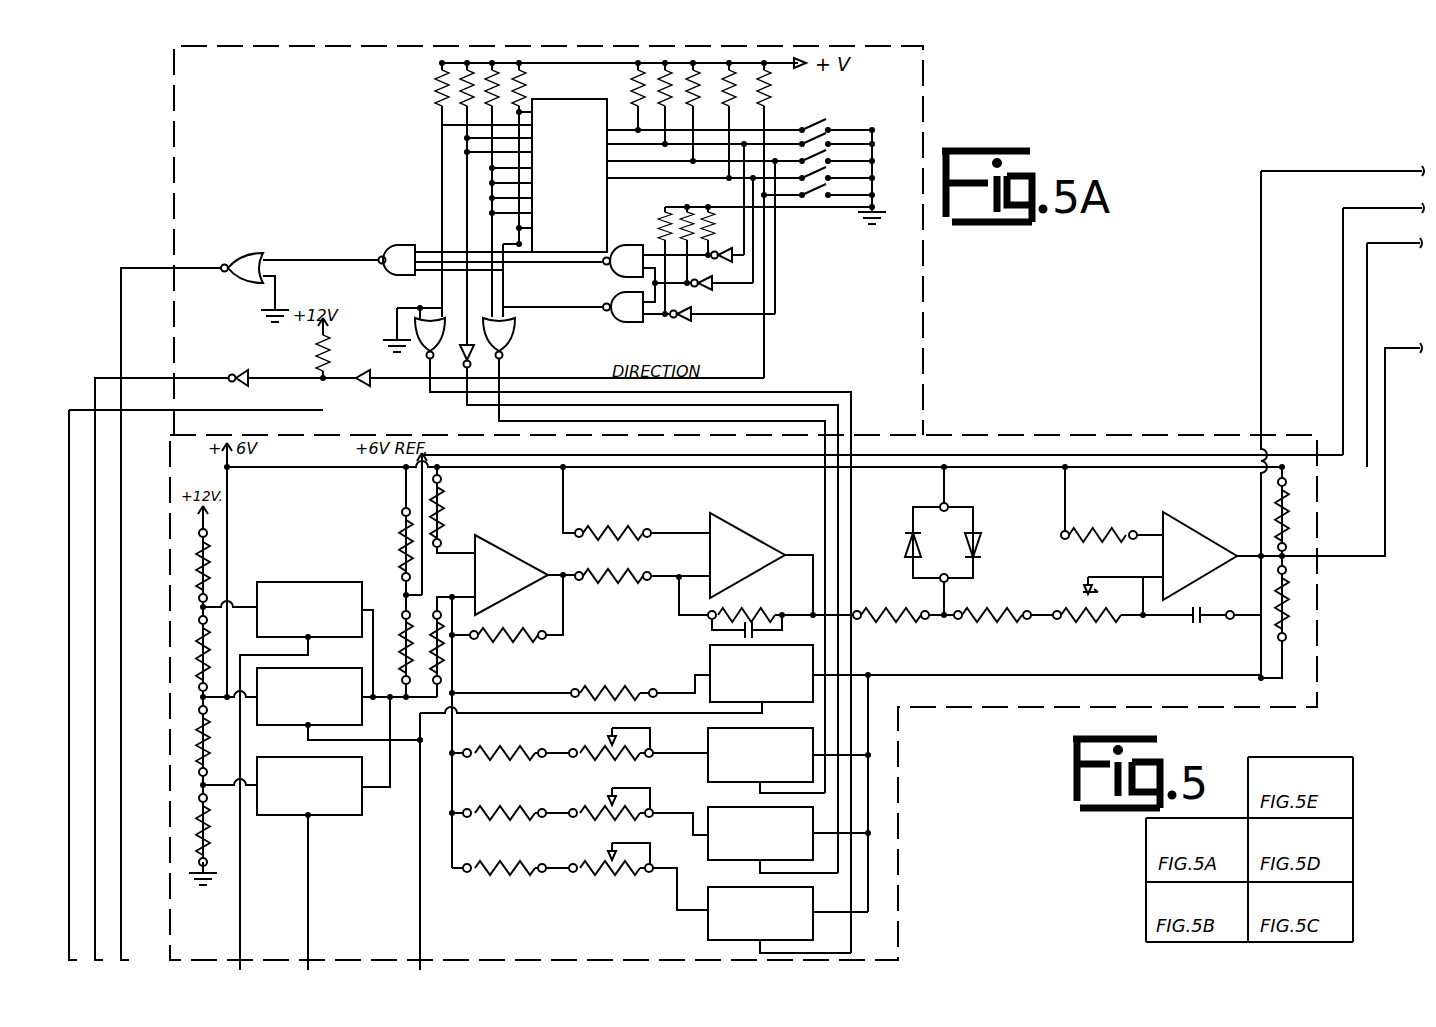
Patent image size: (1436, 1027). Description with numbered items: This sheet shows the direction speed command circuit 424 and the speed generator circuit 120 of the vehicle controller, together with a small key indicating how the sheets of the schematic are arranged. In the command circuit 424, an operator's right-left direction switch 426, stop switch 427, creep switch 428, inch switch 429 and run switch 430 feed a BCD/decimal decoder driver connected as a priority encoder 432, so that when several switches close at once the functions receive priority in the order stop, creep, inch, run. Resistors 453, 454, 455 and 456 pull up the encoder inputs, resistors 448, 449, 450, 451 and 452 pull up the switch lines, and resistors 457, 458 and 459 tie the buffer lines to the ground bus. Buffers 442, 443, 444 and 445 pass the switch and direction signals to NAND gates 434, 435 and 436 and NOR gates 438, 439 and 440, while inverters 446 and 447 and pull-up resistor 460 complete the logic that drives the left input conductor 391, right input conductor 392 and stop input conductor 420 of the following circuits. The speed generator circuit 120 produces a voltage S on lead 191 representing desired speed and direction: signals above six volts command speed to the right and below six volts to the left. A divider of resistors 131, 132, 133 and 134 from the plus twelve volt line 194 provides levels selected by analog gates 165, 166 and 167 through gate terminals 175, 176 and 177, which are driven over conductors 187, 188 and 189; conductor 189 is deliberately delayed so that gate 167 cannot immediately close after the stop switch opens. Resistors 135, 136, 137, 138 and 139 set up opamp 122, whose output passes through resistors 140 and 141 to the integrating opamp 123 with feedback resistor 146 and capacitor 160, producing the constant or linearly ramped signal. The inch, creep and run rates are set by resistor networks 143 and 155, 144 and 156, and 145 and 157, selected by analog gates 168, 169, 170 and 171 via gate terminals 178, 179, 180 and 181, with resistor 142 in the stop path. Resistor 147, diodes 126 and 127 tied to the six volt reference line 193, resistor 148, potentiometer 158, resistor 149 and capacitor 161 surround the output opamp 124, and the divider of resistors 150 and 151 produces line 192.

In FIG. 5A, the resistor 456 is at (437, 90).
In FIG. 5A, the resistor 455 is at (477, 202).
In FIG. 5A, the resistor 454 is at (503, 188).
In FIG. 5A, the resistor 453 is at (529, 153).
In FIG. 5A, the priority encoder 432 is at (618, 100).
In FIG. 5A, the resistor 452 is at (642, 96).
In FIG. 5A, the resistor 451 is at (669, 103).
In FIG. 5A, the resistor 450 is at (697, 112).
In FIG. 5A, the resistor 449 is at (734, 120).
In FIG. 5A, the resistor 448 is at (775, 219).
In FIG. 5A, the run switch 430 is at (818, 126).
In FIG. 5A, the inch switch 429 is at (832, 140).
In FIG. 5A, the creep switch 428 is at (850, 158).
In FIG. 5A, the stop switch 427 is at (860, 180).
In FIG. 5A, the right-left direction switch 426 is at (815, 200).
In FIG. 5A, the resistor 457 is at (662, 214).
In FIG. 5A, the resistor 458 is at (687, 208).
In FIG. 5A, the resistor 459 is at (708, 215).
In FIG. 5A, the NOR gate 438 is at (242, 252).
In FIG. 5A, the NAND gate 436 is at (405, 243).
In FIG. 5A, the NOR gate 439 is at (432, 312).
In FIG. 5A, the NAND gate 435 is at (606, 276).
In FIG. 5A, the NAND gate 434 is at (636, 323).
In FIG. 5A, the buffer 443 is at (702, 290).
In FIG. 5A, the buffer 442 is at (735, 258).
In FIG. 5A, the buffer 444 is at (688, 318).
In FIG. 5A, the NOR gate 440 is at (512, 330).
In FIG. 5A, the inverter 446 is at (475, 363).
In FIG. 5A, the inverter 447 is at (238, 372).
In FIG. 5A, the resistor 460 is at (330, 358).
In FIG. 5A, the buffer 445 is at (360, 384).
In FIG. 5A, the direction speed command circuit 424 is at (932, 293).
In FIG. 5, the speed generator circuit 120 is at (934, 423).
In FIG. 5, the resistor 132 is at (206, 588).
In FIG. 5, the resistor 131 is at (206, 690).
In FIG. 5, the resistor 133 is at (206, 758).
In FIG. 5, the resistor 134 is at (206, 812).
In FIG. 5, the analog gate 165 is at (347, 582).
In FIG. 5, the analog gate 166 is at (320, 668).
In FIG. 5, the analog gate 167 is at (337, 818).
In FIG. 5, the gate terminal 175 is at (305, 646).
In FIG. 5, the gate terminal 176 is at (308, 734).
In FIG. 5, the gate terminal 177 is at (305, 818).
In FIG. 5, the conductor 187 is at (240, 873).
In FIG. 5, the conductor 188 is at (310, 868).
In FIG. 5, the conductor 189 is at (420, 884).
In FIG. 5, the resistor 135 is at (403, 545).
In FIG. 5, the resistor 136 is at (402, 630).
In FIG. 5, the resistor 137 is at (442, 508).
In FIG. 5, the resistor 138 is at (452, 660).
In FIG. 5, the opamp 122 is at (502, 547).
In FIG. 5, the resistor 139 is at (515, 641).
In FIG. 5, the resistor 140 is at (600, 530).
In FIG. 5, the resistor 141 is at (598, 582).
In FIG. 5, the resistor 142 is at (632, 688).
In FIG. 5, the opamp 123 is at (756, 542).
In FIG. 5, the resistor 146 is at (745, 612).
In FIG. 5, the capacitor 160 is at (742, 631).
In FIG. 5, the analog gate 168 is at (710, 656).
In FIG. 5, the gate terminal 178 is at (766, 708).
In FIG. 5, the analog gate 169 is at (708, 731).
In FIG. 5, the gate terminal 179 is at (708, 790).
In FIG. 5, the analog gate 170 is at (708, 807).
In FIG. 5, the gate terminal 180 is at (757, 863).
In FIG. 5, the analog gate 171 is at (707, 897).
In FIG. 5, the gate terminal 181 is at (712, 953).
In FIG. 5, the resistor 143 is at (500, 750).
In FIG. 5, the potentiometer 155 is at (605, 750).
In FIG. 5, the resistor 144 is at (500, 810).
In FIG. 5, the potentiometer 156 is at (605, 810).
In FIG. 5, the resistor 145 is at (500, 866).
In FIG. 5, the potentiometer 157 is at (605, 865).
In FIG. 5, the resistor 147 is at (900, 612).
In FIG. 5, the diode 127 is at (905, 548).
In FIG. 5, the diode 126 is at (975, 532).
In FIG. 5, the resistor 148 is at (995, 620).
In FIG. 5, the potentiometer 158 is at (1105, 625).
In FIG. 5, the capacitor 161 is at (1185, 627).
In FIG. 5, the resistor 149 is at (1100, 530).
In FIG. 5, the opamp 124 is at (1190, 535).
In FIG. 5, the resistor 150 is at (1292, 506).
In FIG. 5, the resistor 151 is at (1290, 615).
In FIG. 5, the lead 191 is at (1398, 160).
In FIG. 5, the line 193 is at (1398, 196).
In FIG. 5, the line 194 is at (1400, 232).
In FIG. 5, the line 192 is at (1390, 348).
In FIG. 5, the voltage S is at (1261, 348).
In FIG. 5, the left input conductor 391 is at (51, 895).
In FIG. 5, the right input conductor 392 is at (86, 898).
In FIG. 5, the input conductor 420 is at (146, 927).